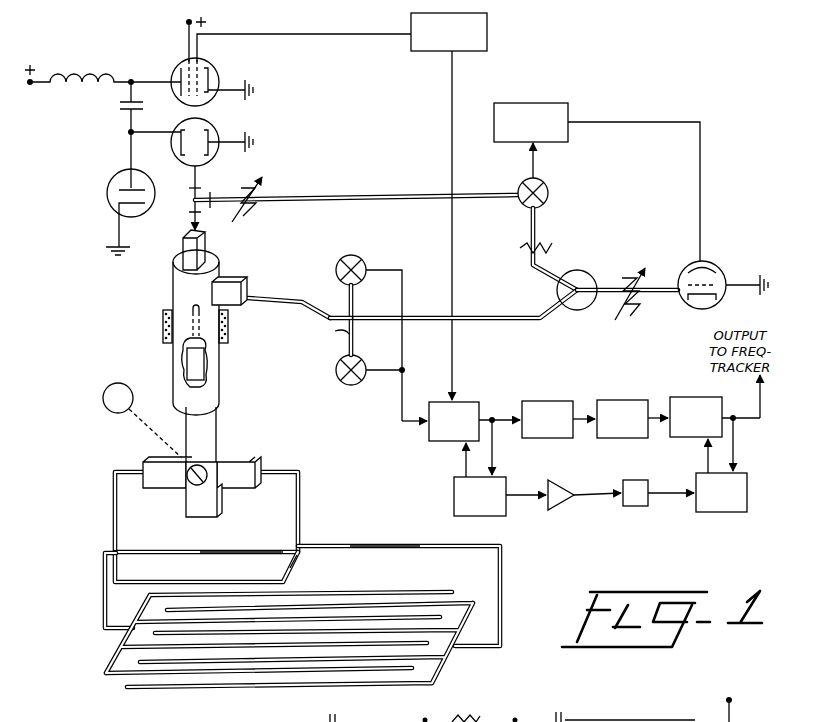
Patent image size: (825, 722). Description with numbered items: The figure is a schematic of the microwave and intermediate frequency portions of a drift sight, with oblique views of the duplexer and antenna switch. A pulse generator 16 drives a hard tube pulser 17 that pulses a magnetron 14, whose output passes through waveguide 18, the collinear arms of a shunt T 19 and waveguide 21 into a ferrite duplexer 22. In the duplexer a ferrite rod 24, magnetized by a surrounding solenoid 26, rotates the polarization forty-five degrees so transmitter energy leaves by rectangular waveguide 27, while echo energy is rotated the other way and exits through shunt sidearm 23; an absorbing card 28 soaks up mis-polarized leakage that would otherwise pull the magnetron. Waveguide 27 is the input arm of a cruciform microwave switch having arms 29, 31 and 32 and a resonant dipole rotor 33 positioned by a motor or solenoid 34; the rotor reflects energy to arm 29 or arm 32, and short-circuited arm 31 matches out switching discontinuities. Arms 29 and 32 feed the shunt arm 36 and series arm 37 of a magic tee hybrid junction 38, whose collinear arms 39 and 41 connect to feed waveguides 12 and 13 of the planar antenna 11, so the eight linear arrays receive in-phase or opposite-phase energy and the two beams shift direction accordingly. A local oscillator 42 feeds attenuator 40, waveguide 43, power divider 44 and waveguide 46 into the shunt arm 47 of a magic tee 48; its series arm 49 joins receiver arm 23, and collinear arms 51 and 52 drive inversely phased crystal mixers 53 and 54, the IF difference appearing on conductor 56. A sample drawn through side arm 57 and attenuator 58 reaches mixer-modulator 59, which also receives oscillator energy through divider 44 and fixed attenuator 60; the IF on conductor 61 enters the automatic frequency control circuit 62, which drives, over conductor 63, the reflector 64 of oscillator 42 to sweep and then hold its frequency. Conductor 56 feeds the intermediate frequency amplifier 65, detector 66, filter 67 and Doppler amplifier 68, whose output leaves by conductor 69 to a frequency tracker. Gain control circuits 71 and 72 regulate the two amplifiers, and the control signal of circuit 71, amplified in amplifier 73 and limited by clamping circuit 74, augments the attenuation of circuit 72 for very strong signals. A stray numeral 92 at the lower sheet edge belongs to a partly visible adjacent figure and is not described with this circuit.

The planar microwave antenna 11 is at (128, 660).
The feed waveguide 12 is at (104, 566).
The feed waveguide 13 is at (502, 556).
The magnetron 14 is at (218, 127).
The pulse generator 16 is at (487, 30).
The hard tube pulser 17 is at (172, 62).
The waveguide 18 is at (190, 188).
The shunt T 19 is at (192, 201).
The waveguide 21 is at (187, 240).
The ferrite duplexer 22 is at (170, 288).
The shunt sidearm 23 is at (234, 282).
The ferrite rod 24 is at (190, 338).
The solenoid 26 is at (160, 325).
The rectangular waveguide 27 is at (210, 426).
The microwave energy absorbing card 28 is at (208, 366).
The cruciform arm 29 is at (166, 488).
The cruciform arm 31 is at (190, 518).
The cruciform arm 32 is at (232, 488).
The rotor 33 is at (208, 466).
The motor or solenoid 34 is at (103, 400).
The shunt arm 36 is at (302, 566).
The series arm 37 is at (302, 505).
The hybrid junction 38 is at (300, 547).
The collinear arm 39 is at (280, 548).
The attenuator 40 is at (631, 312).
The collinear arm 41 is at (406, 546).
The local oscillator 42 is at (720, 266).
The waveguide 43 is at (652, 292).
The power divider 44 is at (577, 310).
The waveguide 46 is at (516, 318).
The shunt arm 47 is at (360, 328).
The magic tee 48 is at (346, 316).
The series arm 49 is at (310, 314).
The collinear arm 51 is at (356, 300).
The collinear arm 52 is at (335, 331).
The crystal mixer 53 is at (336, 372).
The crystal mixer 54 is at (362, 258).
The output conductor 56 is at (402, 414).
The side arm 57 is at (210, 193).
The attenuator 58 is at (260, 188).
The mixer-modulator 59 is at (548, 193).
The fixed attenuator 60 is at (554, 248).
The output conductor 61 is at (540, 158).
The automatic frequency control circuit 62 is at (545, 103).
The conductor 63 is at (658, 122).
The reflector 64 is at (690, 266).
The intermediate frequency amplifier 65 is at (470, 402).
The detector 66 is at (548, 401).
The filter 67 is at (620, 400).
The Doppler frequency amplifier 68 is at (678, 397).
The conductor 69 is at (764, 418).
The gain control circuit 71 is at (490, 517).
The gain control circuit 72 is at (742, 512).
The amplifier 73 is at (556, 512).
The clamping circuit 74 is at (637, 507).
The partial element of adjacent figure 92 is at (531, 709).